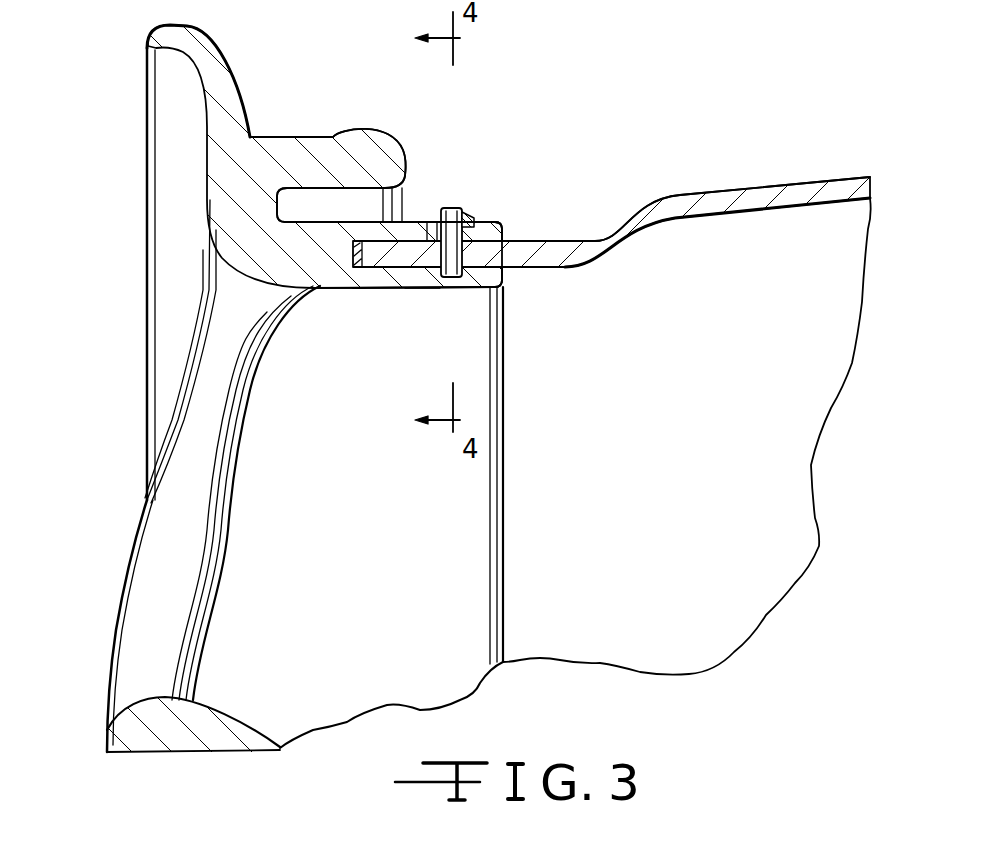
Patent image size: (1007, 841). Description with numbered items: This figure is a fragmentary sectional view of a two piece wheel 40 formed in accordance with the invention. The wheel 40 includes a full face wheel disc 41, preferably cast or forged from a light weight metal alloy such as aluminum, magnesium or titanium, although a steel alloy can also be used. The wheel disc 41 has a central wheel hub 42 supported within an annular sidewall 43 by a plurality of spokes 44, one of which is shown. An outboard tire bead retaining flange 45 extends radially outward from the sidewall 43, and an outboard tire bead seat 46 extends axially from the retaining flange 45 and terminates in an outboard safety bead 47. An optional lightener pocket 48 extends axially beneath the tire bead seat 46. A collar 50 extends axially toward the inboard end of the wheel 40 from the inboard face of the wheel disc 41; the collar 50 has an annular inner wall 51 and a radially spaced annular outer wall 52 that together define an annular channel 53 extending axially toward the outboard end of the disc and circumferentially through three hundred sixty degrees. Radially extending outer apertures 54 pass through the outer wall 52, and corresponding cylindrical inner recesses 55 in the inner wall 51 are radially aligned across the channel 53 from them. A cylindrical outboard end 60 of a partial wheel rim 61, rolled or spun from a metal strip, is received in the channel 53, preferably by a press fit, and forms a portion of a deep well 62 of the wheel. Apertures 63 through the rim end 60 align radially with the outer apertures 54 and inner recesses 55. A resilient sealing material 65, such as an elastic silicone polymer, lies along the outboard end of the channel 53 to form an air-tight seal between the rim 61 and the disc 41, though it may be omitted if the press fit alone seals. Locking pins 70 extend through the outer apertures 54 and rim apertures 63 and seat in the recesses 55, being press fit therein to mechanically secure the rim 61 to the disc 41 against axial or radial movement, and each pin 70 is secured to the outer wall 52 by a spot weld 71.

The two piece wheel 40 is at (650, 100).
The full face wheel disc 41 is at (118, 541).
The central wheel hub 42 is at (217, 723).
The annular sidewall 43 is at (223, 202).
The spoke 44 is at (178, 583).
The outboard tire bead retaining flange 45 is at (228, 60).
The outboard tire bead seat 46 is at (282, 137).
The outboard safety bead 47 is at (373, 153).
The lightener pocket 48 is at (313, 200).
The collar 50 is at (435, 295).
The annular inner wall 51 is at (503, 318).
The annular outer wall 52 is at (500, 238).
The annular channel 53 is at (525, 280).
The outer aperture 54 is at (425, 195).
The cylindrical inner recess 55 is at (487, 275).
The cylindrical outboard end 60 is at (572, 250).
The partial wheel rim 61 is at (711, 411).
The deep well 62 is at (575, 203).
The aperture 63 is at (423, 288).
The resilient sealing material 65 is at (350, 288).
The locking pin 70 is at (454, 210).
The spot weld 71 is at (472, 213).